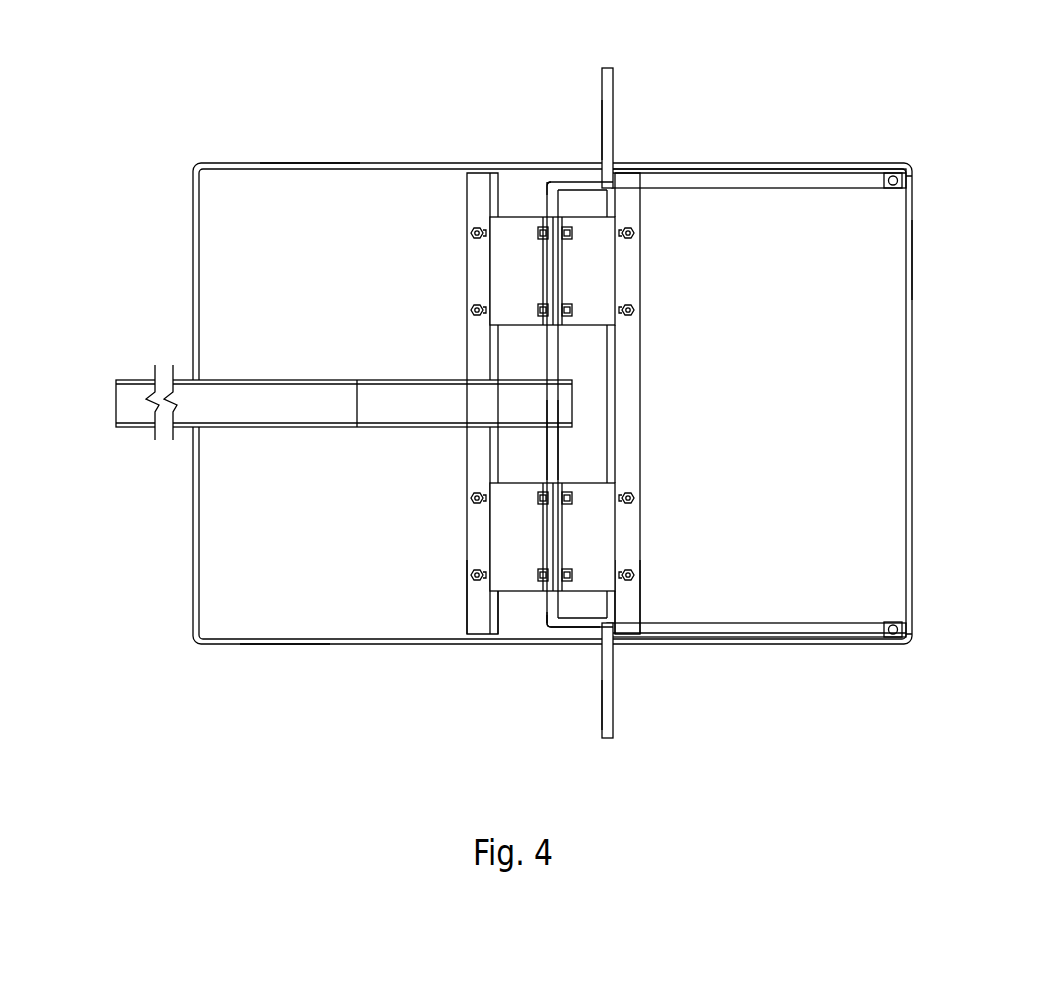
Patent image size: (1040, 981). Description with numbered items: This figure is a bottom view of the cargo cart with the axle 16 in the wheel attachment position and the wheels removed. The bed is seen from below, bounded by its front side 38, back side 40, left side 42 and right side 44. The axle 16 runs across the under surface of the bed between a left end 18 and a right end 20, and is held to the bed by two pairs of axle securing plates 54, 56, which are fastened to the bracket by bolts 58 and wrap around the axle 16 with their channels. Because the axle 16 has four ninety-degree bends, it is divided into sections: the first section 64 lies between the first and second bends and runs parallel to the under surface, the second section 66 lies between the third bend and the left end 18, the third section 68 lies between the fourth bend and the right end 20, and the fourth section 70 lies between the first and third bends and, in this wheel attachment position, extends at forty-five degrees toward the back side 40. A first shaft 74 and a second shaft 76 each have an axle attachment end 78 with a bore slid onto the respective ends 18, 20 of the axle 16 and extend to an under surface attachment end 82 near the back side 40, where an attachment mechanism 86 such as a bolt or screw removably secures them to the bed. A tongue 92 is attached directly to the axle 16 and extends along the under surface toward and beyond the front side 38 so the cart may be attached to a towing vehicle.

The axle 16 is at (555, 358).
The left end 18 is at (608, 740).
The right end 20 is at (608, 66).
The front side 38 is at (192, 198).
The back side 40 is at (912, 257).
The left side 42 is at (283, 644).
The right side 44 is at (294, 163).
The axle securing plates 54 is at (498, 230).
The axle securing plates 56 is at (498, 580).
The bolts 58 is at (471, 310).
The first section 64 is at (555, 455).
The second section 66 is at (610, 700).
The third section 68 is at (613, 118).
The fourth section 70 is at (555, 630).
The first shaft 74 is at (752, 170).
The second shaft 76 is at (752, 640).
The axle attachment end 78 is at (604, 182).
The under surface attachment end 82 is at (890, 171).
The attachment mechanism 86 is at (912, 180).
The tongue 92 is at (262, 398).